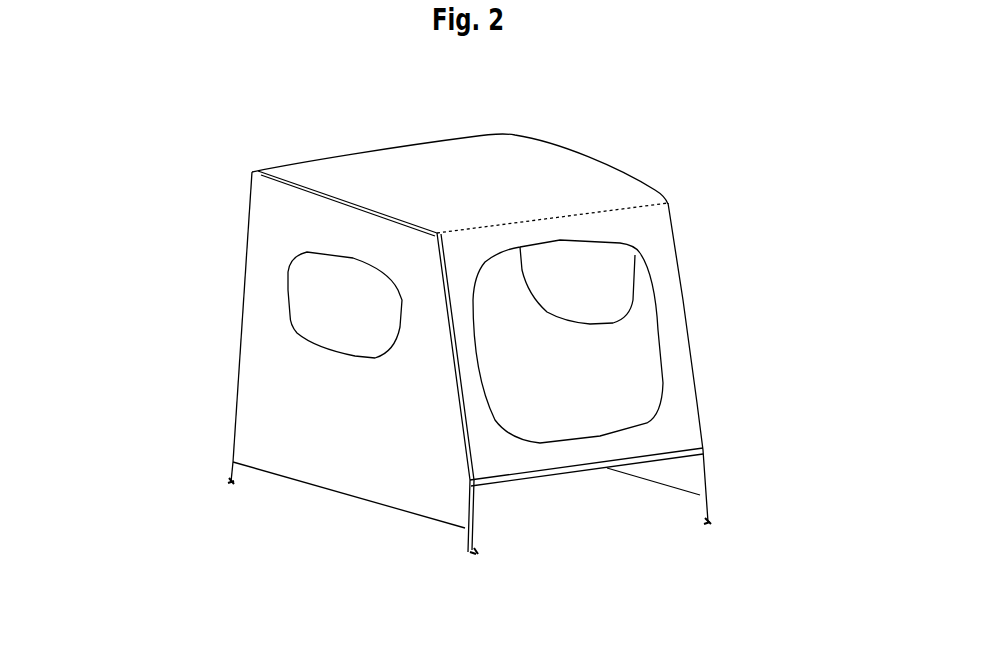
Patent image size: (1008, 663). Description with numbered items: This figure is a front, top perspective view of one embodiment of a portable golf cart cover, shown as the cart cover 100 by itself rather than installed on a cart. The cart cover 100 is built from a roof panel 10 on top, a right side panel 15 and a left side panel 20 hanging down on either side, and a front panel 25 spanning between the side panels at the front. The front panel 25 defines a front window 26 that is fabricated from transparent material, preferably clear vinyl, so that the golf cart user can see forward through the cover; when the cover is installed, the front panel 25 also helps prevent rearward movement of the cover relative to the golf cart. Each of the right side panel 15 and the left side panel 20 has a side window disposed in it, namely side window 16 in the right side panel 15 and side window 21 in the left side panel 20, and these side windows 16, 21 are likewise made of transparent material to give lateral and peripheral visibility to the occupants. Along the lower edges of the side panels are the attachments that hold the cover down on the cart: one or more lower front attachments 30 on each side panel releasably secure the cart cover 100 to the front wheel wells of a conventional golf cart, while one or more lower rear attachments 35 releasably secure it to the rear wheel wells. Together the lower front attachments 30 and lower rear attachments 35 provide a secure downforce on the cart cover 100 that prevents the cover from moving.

The cart cover 100 is at (798, 115).
The roof panel 10 is at (423, 167).
The right side panel 15 is at (259, 389).
The side window 16 is at (290, 285).
The front panel 25 is at (653, 225).
The left side panel 20 is at (613, 398).
The side window 21 is at (633, 297).
The front window 26 is at (663, 363).
The lower front attachment 30 is at (478, 558).
The lower rear attachment 35 is at (228, 487).